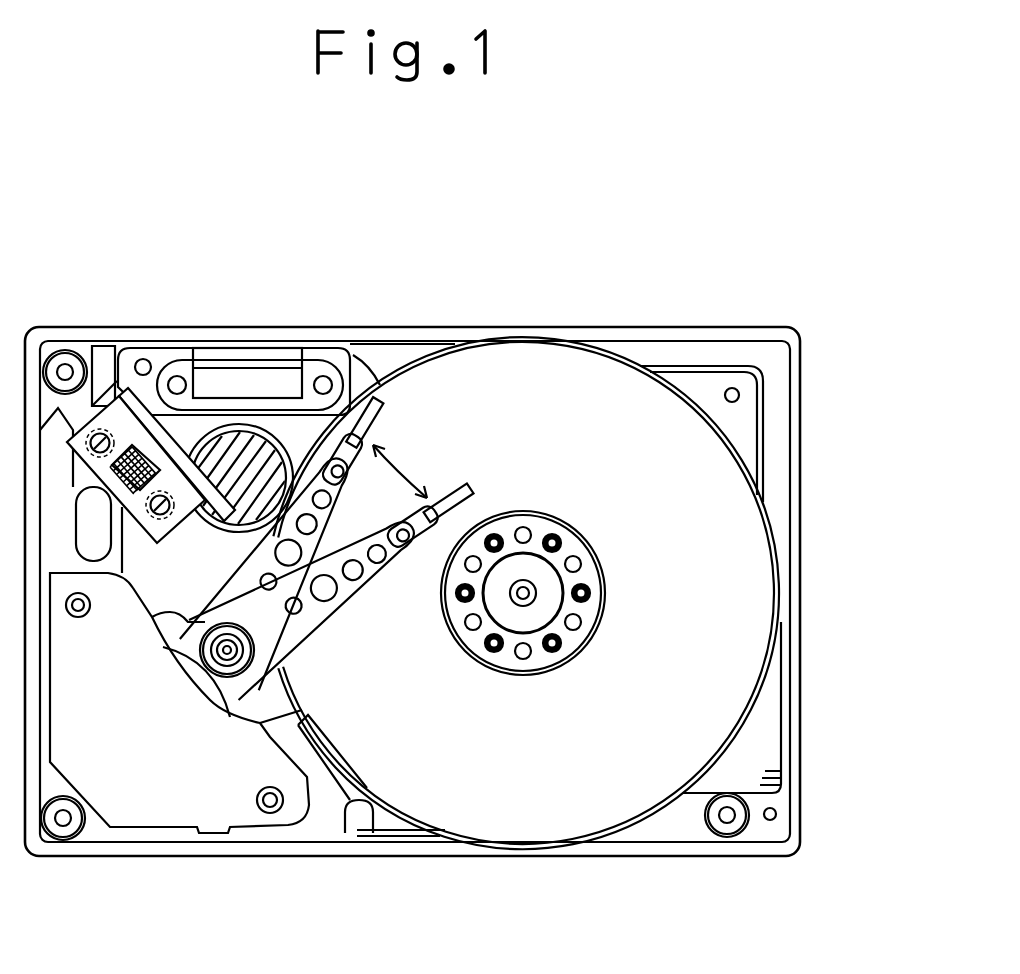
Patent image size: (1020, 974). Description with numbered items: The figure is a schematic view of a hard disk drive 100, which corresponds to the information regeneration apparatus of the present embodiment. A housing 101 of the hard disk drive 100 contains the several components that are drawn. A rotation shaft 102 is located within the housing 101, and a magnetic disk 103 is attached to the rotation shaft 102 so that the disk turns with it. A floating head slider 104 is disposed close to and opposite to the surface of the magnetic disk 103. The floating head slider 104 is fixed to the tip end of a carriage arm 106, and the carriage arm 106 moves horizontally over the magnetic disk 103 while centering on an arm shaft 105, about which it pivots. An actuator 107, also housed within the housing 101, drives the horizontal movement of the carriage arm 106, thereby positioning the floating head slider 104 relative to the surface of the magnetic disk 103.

The hard disk drive 100 is at (598, 210).
The housing 101 is at (645, 328).
The rotation shaft 102 is at (547, 603).
The magnetic disk 103 is at (740, 545).
The floating head slider 104 is at (447, 497).
The arm shaft 105 is at (227, 668).
The carriage arm 106 is at (312, 620).
The actuator 107 is at (133, 805).